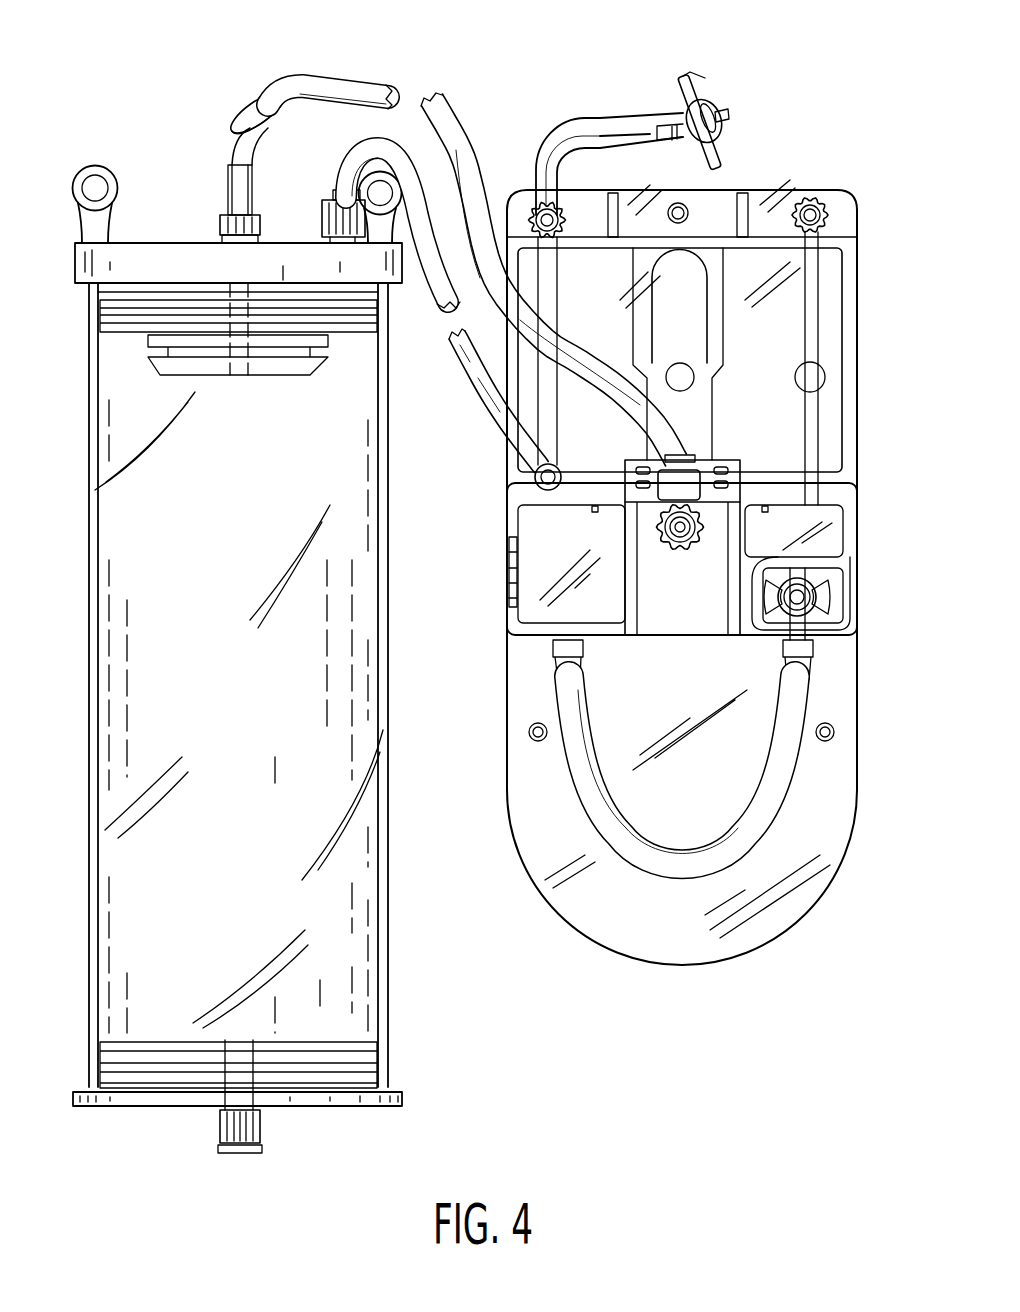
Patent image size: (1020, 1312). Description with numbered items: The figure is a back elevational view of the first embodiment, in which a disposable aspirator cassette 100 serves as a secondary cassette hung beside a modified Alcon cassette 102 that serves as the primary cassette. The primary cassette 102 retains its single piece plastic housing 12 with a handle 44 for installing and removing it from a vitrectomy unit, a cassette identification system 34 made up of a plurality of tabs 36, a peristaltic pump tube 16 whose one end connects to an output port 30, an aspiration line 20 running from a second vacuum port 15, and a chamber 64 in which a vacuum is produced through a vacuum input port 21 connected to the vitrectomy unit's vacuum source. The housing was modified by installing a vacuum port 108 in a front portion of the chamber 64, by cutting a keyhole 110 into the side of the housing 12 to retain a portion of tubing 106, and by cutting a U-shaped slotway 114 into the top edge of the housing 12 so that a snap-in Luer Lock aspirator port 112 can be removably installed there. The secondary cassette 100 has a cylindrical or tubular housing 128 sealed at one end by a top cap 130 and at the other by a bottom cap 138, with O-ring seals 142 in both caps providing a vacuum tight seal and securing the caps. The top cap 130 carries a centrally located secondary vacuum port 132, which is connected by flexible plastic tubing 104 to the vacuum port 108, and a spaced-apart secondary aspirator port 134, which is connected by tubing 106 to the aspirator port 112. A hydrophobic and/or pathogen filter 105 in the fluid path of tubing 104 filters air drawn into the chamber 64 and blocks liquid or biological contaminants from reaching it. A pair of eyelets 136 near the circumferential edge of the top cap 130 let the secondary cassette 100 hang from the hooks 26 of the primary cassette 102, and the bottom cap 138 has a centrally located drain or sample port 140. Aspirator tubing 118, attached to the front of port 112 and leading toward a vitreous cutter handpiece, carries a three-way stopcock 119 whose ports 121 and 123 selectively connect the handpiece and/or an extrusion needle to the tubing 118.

The housing 12 is at (795, 935).
The second vacuum port 15 is at (827, 193).
The peristaltic pump tube 16 is at (570, 784).
The aspiration line 20 is at (800, 347).
The vacuum input port 21 is at (700, 434).
The hooks 26 is at (524, 732).
The output port 30 is at (828, 600).
The cassette identification system 34 is at (507, 577).
The tabs 36 is at (500, 535).
The handle 44 is at (632, 313).
The chamber 64 is at (673, 610).
The disposable aspirator cassette 100 is at (408, 965).
The modified Alcon cassette 102 is at (780, 164).
The flexible plastic tubing 104 is at (270, 84).
The hydrophobic and/or pathogen filter 105 is at (232, 100).
The flexible plastic tubing 106 is at (362, 152).
The vacuum port 108 is at (685, 553).
The keyhole 110 is at (562, 476).
The vacuum and/or aspirator port 112 is at (537, 216).
The U-shaped slotway 114 is at (562, 208).
The aspirator tubing 118 is at (595, 118).
The three-way stopcock 119 is at (708, 92).
The port 121 is at (678, 74).
The port 123 is at (727, 143).
The cylindrical or tubular housing 128 is at (392, 900).
The top cap 130 is at (76, 265).
The secondary vacuum port 132 is at (218, 228).
The secondary aspirator port 134 is at (322, 225).
The eyelets 136 is at (85, 166).
The bottom cap 138 is at (402, 1098).
The drain or sample port 140 is at (262, 1125).
The O-ring seals 142 is at (100, 312).